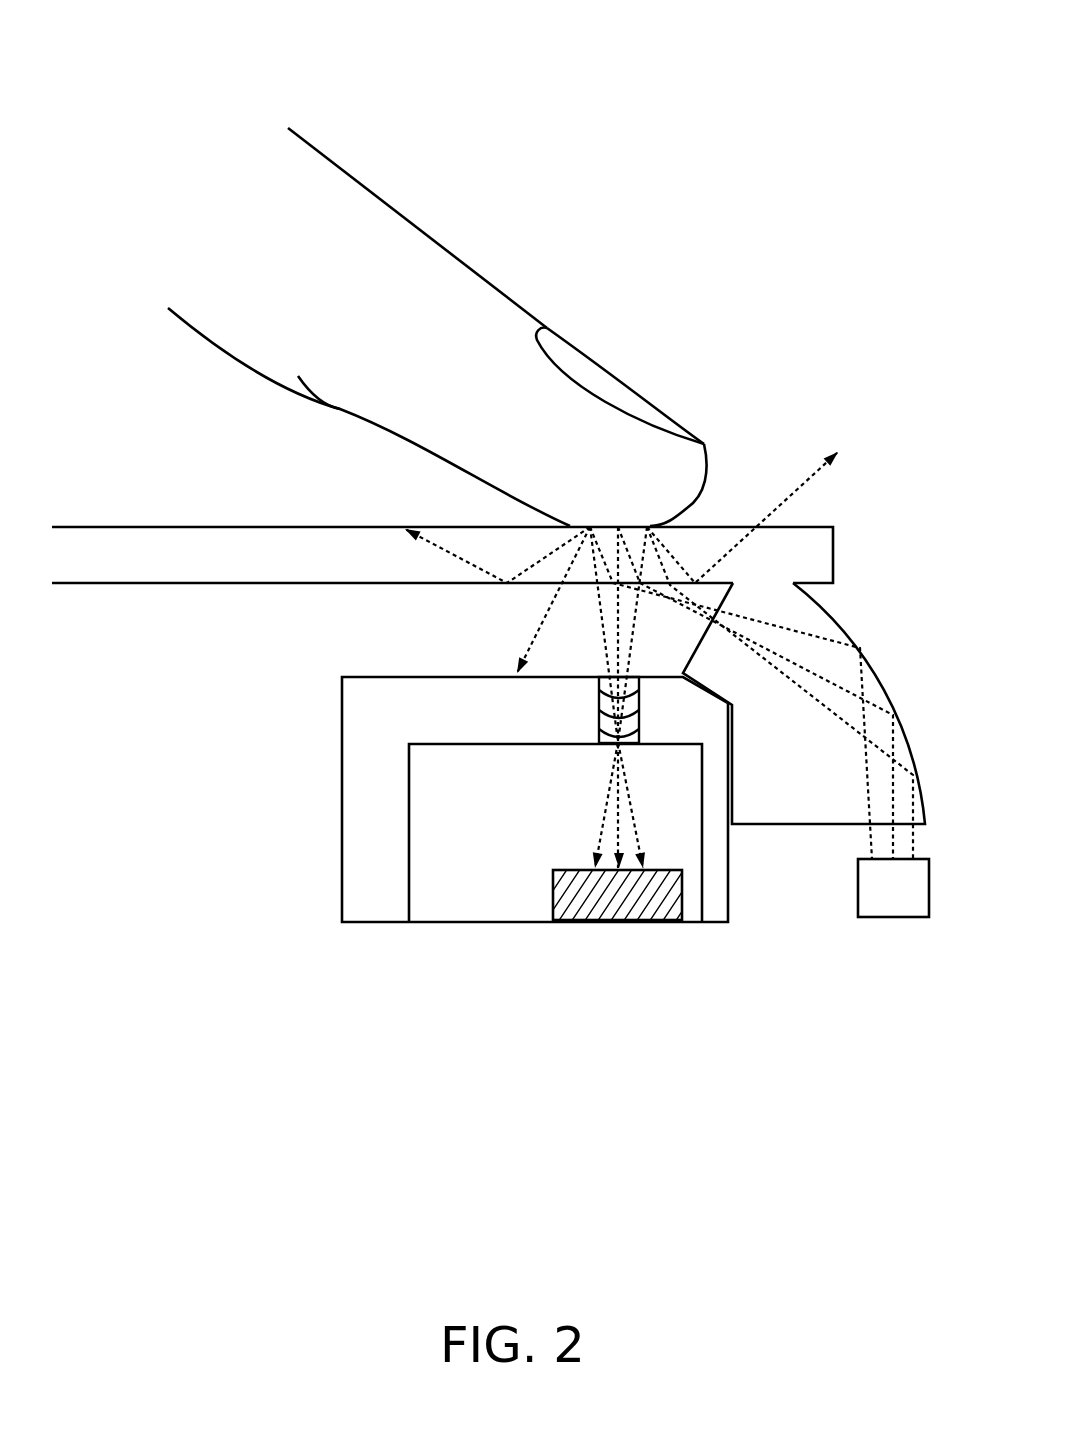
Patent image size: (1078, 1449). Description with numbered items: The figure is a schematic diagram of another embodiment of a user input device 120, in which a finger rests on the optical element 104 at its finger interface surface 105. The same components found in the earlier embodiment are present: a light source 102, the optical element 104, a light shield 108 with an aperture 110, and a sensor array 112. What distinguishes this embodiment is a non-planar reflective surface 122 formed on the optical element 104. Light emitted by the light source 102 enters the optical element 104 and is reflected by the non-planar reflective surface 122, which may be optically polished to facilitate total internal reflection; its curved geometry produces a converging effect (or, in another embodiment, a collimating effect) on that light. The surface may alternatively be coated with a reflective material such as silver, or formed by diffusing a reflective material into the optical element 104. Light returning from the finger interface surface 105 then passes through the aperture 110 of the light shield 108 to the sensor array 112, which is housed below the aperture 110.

The user input device 120 is at (180, 57).
The light source 102 is at (892, 918).
The optical element 104 is at (833, 553).
The finger interface surface 105 is at (723, 525).
The light shield 108 is at (342, 797).
The aperture 110 is at (603, 757).
The sensor array 112 is at (553, 893).
The non-planar reflective surface 122 is at (890, 687).